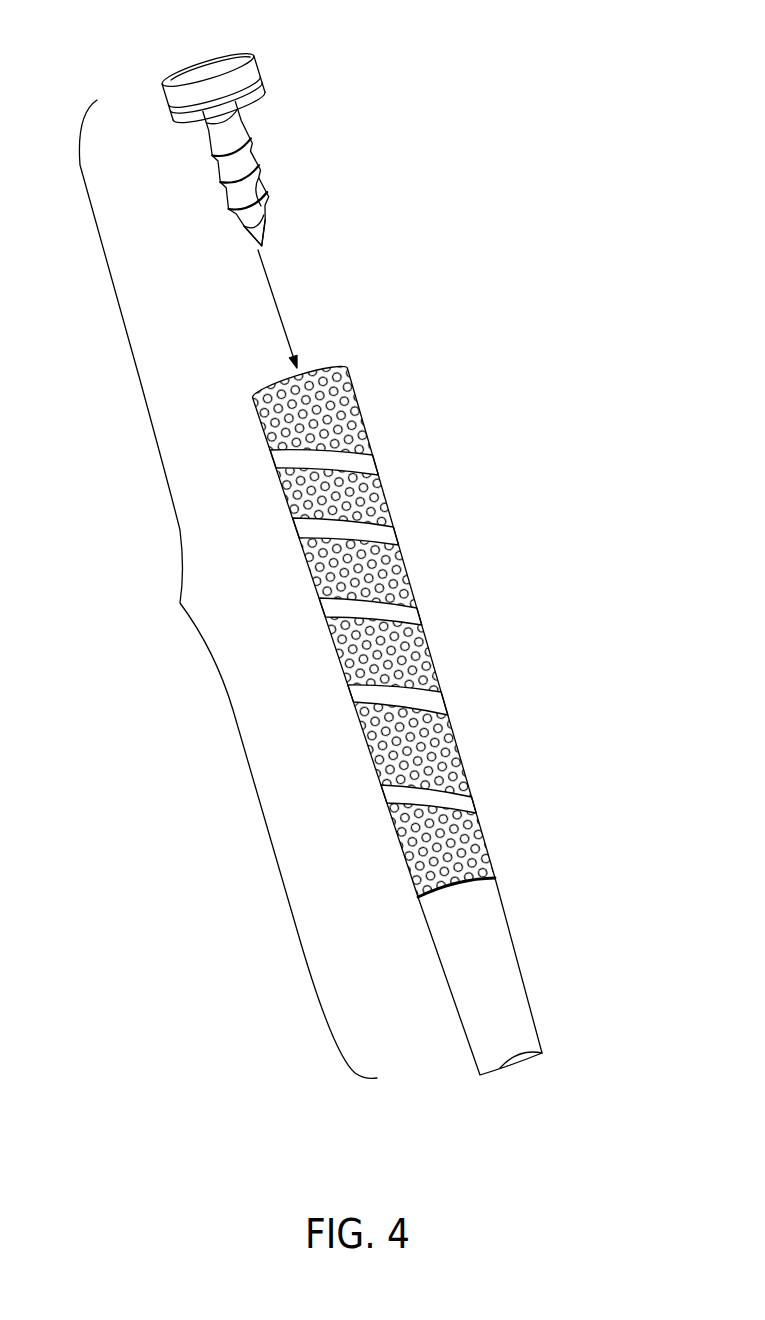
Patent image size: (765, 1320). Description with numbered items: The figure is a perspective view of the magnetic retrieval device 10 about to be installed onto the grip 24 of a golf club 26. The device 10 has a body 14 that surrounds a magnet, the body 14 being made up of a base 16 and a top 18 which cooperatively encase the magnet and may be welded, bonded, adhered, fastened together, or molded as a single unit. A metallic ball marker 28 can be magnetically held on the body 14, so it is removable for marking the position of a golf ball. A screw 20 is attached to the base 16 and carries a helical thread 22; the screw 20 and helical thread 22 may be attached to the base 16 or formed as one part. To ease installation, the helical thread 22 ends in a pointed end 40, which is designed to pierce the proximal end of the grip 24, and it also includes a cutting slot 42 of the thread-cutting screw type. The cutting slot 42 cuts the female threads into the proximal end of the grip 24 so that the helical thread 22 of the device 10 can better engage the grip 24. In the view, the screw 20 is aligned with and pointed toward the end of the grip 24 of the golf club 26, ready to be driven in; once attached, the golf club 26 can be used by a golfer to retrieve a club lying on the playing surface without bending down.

The magnetic retrieval device 10 is at (396, 116).
The body 14 is at (264, 129).
The base 16 is at (252, 105).
The top 18 is at (250, 72).
The screw 20 is at (257, 165).
The helical thread 22 is at (268, 195).
The grip 24 is at (402, 582).
The golf club 26 is at (505, 949).
The metallic ball marker 28 is at (217, 56).
The pointed end 40 is at (258, 240).
The cutting slot 42 is at (270, 215).